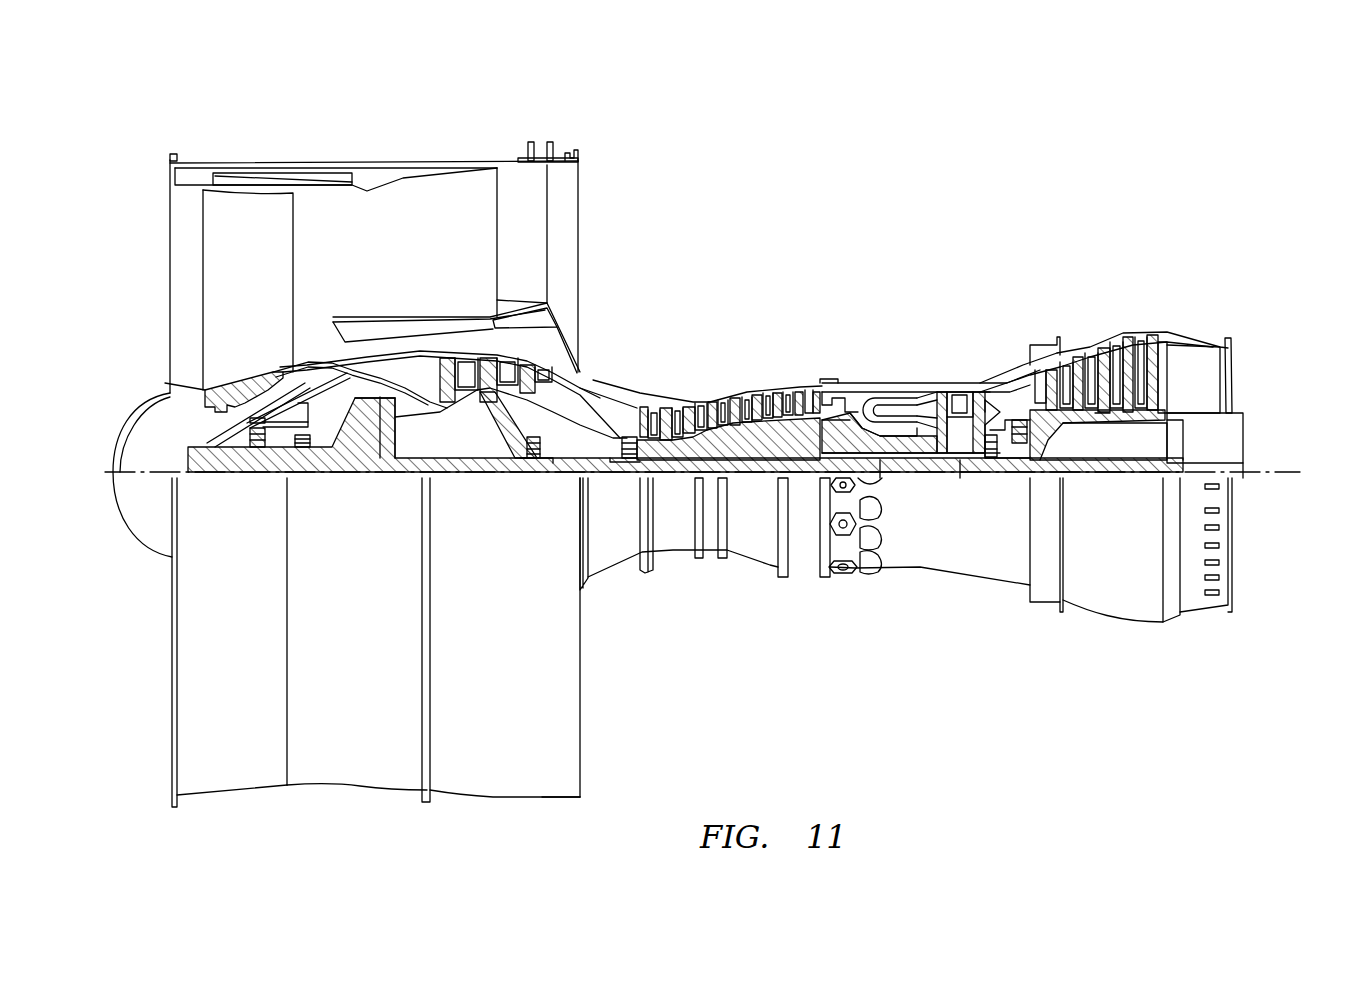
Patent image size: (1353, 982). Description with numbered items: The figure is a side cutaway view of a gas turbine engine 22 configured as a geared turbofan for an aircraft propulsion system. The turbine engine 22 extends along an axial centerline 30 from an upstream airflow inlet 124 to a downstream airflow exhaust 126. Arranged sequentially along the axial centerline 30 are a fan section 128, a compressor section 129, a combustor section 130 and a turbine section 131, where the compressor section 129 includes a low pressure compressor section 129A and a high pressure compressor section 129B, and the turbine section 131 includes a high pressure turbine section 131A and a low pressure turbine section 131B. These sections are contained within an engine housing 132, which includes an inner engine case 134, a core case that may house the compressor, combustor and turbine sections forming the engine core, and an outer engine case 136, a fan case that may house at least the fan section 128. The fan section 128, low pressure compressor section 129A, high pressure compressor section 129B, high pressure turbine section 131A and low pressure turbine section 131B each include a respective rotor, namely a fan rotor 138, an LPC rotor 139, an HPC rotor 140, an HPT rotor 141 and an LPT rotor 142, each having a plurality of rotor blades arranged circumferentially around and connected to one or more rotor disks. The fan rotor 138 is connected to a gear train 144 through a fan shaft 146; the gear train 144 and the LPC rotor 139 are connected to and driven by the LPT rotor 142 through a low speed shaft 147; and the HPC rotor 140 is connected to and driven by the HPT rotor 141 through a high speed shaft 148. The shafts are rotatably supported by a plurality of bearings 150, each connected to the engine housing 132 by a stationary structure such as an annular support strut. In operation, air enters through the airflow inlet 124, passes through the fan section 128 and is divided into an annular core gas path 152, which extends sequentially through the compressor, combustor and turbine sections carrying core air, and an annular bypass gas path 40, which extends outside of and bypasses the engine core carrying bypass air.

The gas turbine engine 22 is at (138, 143).
The axial centerline 30 is at (1292, 490).
The bypass gas path 40 is at (428, 250).
The airflow inlet 124 is at (172, 235).
The airflow exhaust 126 is at (1232, 375).
The fan section 128 is at (342, 138).
The compressor section 129 is at (800, 78).
The low pressure compressor section 129A is at (580, 123).
The high pressure compressor section 129B is at (802, 313).
The combustor section 130 is at (926, 313).
The turbine section 131 is at (1192, 243).
The high pressure turbine section 131A is at (1008, 313).
The low pressure turbine section 131B is at (1192, 313).
The engine housing 132 is at (635, 662).
The inner engine case 134 is at (680, 553).
The outer engine case 136 is at (542, 798).
The fan rotor 138 is at (200, 398).
The LPC rotor 139 is at (480, 430).
The HPC rotor 140 is at (672, 478).
The HPT rotor 141 is at (966, 478).
The LPT rotor 142 is at (1105, 417).
The gear train 144 is at (378, 478).
The fan shaft 146 is at (240, 478).
The low speed shaft 147 is at (562, 478).
The high speed shaft 148 is at (895, 478).
The bearings 150 is at (278, 450).
The core gas path 152 is at (600, 400).